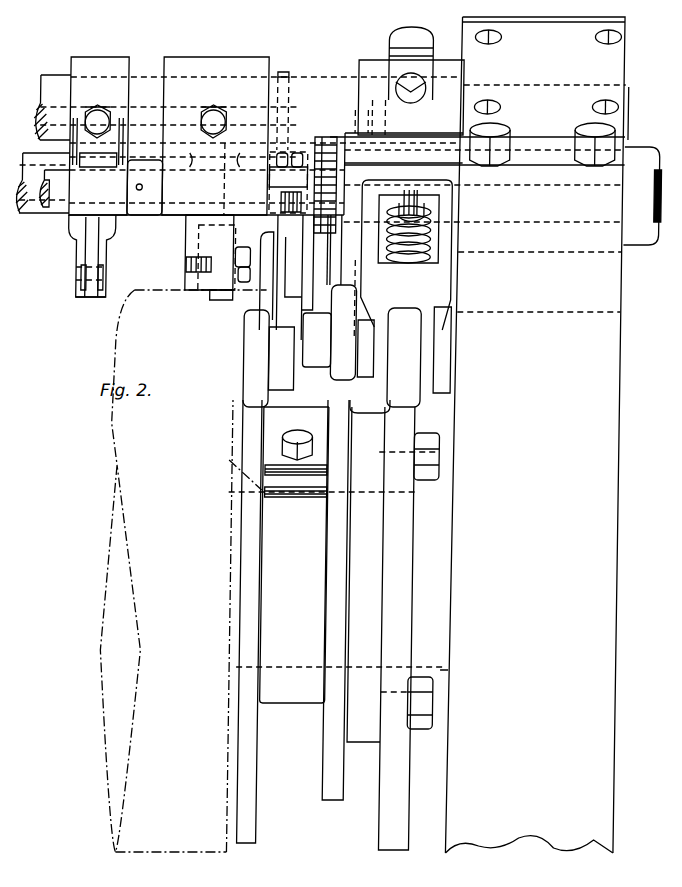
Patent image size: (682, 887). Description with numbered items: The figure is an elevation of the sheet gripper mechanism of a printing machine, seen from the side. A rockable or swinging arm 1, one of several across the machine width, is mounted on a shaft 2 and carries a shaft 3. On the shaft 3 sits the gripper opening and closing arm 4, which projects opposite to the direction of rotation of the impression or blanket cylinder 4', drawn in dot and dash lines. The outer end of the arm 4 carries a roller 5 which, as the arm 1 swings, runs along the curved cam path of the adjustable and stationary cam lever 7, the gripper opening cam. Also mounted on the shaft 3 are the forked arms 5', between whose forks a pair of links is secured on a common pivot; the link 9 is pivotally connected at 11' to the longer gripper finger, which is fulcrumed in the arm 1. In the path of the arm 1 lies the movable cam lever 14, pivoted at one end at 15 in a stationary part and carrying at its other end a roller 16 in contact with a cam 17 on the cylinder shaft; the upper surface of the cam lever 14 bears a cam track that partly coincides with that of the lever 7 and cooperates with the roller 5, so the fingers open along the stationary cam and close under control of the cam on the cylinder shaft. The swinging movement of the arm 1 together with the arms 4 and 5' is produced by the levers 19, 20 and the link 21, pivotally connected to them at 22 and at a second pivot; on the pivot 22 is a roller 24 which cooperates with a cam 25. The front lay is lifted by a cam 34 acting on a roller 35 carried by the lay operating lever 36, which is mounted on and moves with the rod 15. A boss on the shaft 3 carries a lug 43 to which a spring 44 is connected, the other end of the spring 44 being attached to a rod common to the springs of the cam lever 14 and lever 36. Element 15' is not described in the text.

The oscillating or swinging arm 1 is at (78, 238).
The shaft 2 is at (56, 93).
The shaft 3 is at (62, 185).
The gripper opening and closing arm 4 is at (302, 277).
The impression or blanket cylinder 4' is at (181, 571).
The roller 5 is at (341, 167).
The forked arm 5' is at (77, 310).
The cam lever 7 is at (346, 240).
The link 9 is at (95, 248).
The pivotal connection 11' is at (111, 278).
The cam lever 14 is at (315, 288).
The pivot rod 15 is at (144, 202).
The plate 15' is at (193, 257).
The roller 16 is at (345, 362).
The cam 17 is at (338, 566).
The lever 19 is at (425, 368).
The lever 20 is at (375, 72).
The link 21 is at (420, 281).
The pivot 22 is at (413, 393).
The roller 24 is at (400, 385).
The cam 25 is at (397, 528).
The cam 34 is at (253, 601).
The roller 35 is at (258, 385).
The lay operating lever 36 is at (278, 297).
The lug 43 is at (418, 211).
The spring 44 is at (430, 247).